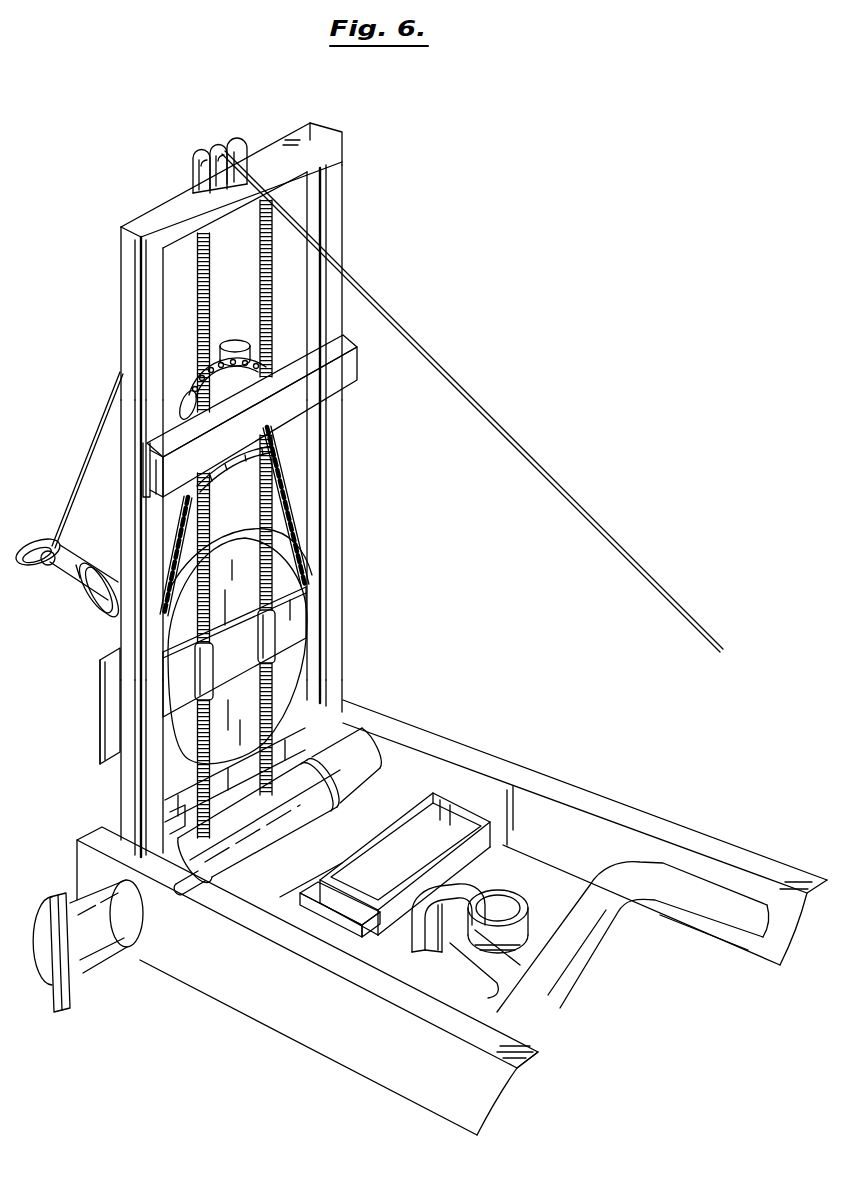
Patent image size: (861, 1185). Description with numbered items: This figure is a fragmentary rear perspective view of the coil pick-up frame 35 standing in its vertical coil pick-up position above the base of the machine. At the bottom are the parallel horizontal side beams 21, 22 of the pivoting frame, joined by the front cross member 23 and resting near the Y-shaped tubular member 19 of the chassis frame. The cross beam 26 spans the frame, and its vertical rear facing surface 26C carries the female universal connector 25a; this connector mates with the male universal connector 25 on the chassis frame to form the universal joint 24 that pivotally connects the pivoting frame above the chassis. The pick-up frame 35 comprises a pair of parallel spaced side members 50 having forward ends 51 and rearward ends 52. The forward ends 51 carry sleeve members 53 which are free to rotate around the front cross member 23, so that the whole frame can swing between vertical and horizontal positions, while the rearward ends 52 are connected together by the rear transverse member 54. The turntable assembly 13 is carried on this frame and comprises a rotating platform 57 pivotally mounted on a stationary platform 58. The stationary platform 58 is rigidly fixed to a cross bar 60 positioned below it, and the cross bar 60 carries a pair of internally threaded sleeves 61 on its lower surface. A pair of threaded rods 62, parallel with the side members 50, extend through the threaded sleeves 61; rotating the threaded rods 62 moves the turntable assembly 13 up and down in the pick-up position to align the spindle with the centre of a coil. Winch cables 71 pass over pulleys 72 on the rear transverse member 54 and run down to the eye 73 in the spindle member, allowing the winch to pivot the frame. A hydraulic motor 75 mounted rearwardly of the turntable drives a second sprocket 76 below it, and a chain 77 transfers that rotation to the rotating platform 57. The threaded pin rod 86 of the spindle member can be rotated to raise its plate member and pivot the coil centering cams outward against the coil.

The turntable assembly 13 is at (94, 669).
The Y-shaped tubular member 19 is at (598, 952).
The side beam 21 is at (246, 1002).
The side beam 22 is at (572, 790).
The front cross member 23 is at (274, 832).
The universal joint 24 is at (420, 950).
The male universal connector 25 is at (528, 916).
The female universal connector 25a is at (432, 892).
The cross beam 26 is at (480, 886).
The vertical rear facing surface 26C is at (456, 872).
The coil pick-up frame 35 is at (365, 407).
The side member 50 is at (336, 452).
The forward end 51 is at (346, 720).
The rearward end 52 is at (344, 182).
The sleeve member 53 is at (342, 800).
The rear transverse member 54 is at (305, 136).
The rotating platform 57 is at (100, 712).
The stationary platform 58 is at (282, 672).
The cross bar 60 is at (332, 626).
The internally threaded sleeve 61 is at (196, 660).
The threaded rod 62 is at (211, 264).
The winch cable 71 is at (100, 430).
The pulley 72 is at (236, 146).
The eye 73 is at (44, 540).
The hydraulic motor 75 is at (272, 360).
The second sprocket 76 is at (230, 474).
The chain 77 is at (302, 548).
The threaded pin rod 86 is at (106, 560).